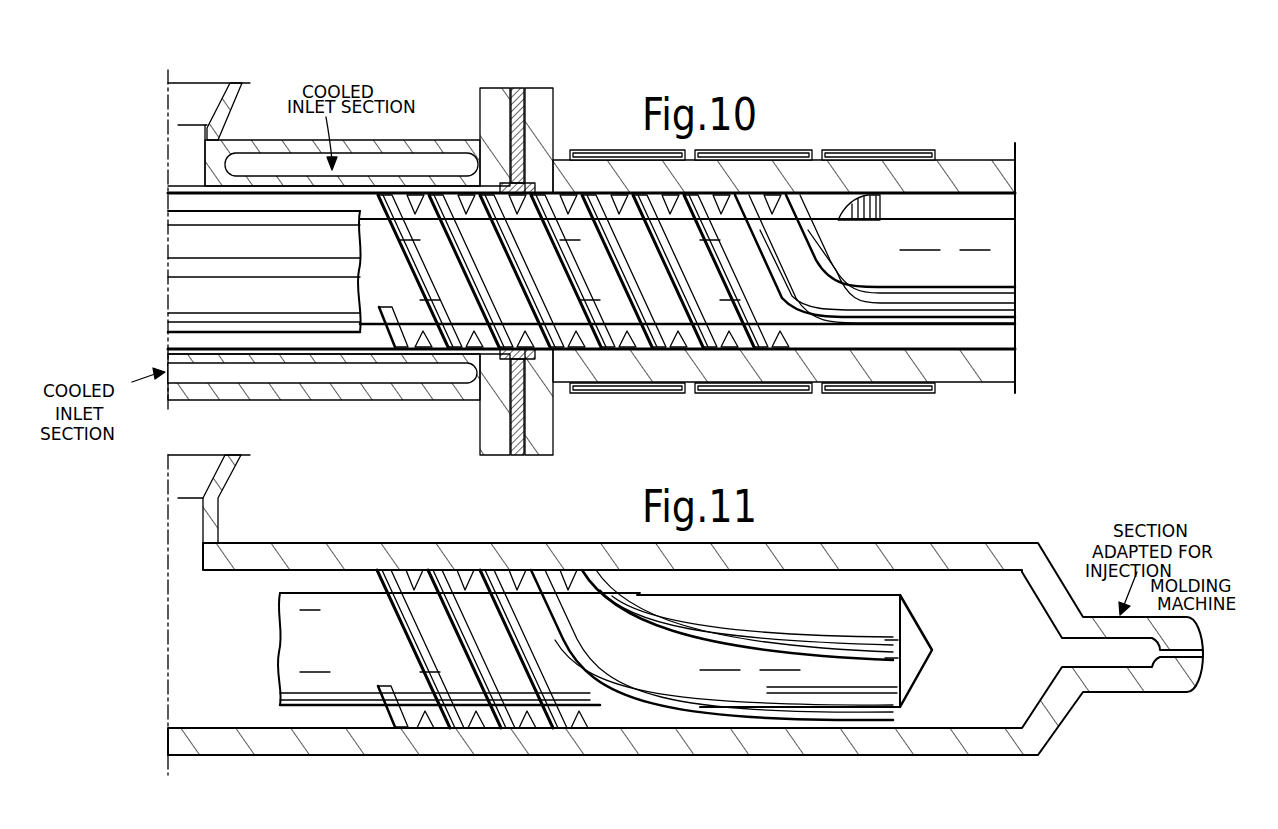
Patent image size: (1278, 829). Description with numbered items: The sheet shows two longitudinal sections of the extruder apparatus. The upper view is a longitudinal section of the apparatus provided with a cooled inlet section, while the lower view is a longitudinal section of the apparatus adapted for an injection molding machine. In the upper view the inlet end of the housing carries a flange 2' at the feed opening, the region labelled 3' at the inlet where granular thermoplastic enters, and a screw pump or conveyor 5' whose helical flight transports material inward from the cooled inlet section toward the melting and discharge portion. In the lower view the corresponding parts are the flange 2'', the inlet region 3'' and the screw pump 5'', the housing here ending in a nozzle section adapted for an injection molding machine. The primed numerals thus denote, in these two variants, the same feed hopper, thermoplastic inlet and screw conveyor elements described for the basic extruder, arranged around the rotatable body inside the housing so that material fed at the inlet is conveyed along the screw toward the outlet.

In FIG. 10, the inlet section of barrel (cooled inlet section) 3' is at (209, 112).
In FIG. 10, the inlet flange 2' is at (234, 111).
In FIG. 10, the screw flight 5' is at (696, 319).
In FIG. 11, the inlet section of barrel 3'' is at (209, 459).
In FIG. 11, the inlet flange 2'' is at (236, 499).
In FIG. 11, the screw flight 5'' is at (635, 683).